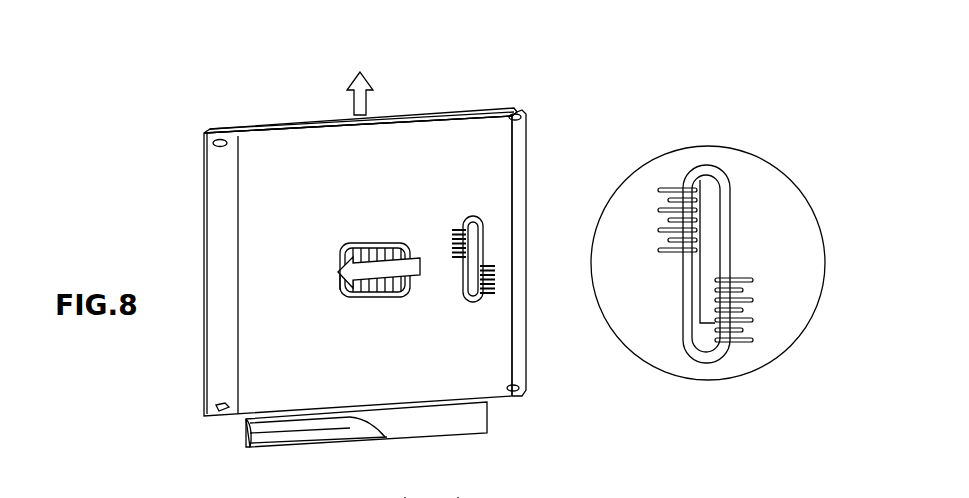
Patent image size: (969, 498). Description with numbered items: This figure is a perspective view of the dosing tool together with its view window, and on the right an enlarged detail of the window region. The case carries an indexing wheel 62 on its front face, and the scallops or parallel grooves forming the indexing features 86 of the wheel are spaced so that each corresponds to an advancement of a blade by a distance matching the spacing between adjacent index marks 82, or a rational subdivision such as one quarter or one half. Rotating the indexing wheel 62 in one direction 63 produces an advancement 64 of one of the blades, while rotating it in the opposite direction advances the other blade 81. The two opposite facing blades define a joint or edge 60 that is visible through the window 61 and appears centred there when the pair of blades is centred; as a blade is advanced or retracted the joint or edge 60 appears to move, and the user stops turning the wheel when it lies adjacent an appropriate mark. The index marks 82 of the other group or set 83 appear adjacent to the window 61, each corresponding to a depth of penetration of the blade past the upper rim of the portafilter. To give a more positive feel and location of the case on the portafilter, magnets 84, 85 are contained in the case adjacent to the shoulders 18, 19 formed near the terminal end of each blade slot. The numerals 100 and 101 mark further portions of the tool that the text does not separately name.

The shoulder 18 is at (203, 137).
The magnet 84 is at (224, 139).
The indexing features 86 is at (375, 242).
The top edge 100 is at (465, 113).
The magnet 85 is at (517, 113).
The shoulder 19 is at (528, 140).
The window 61 is at (479, 238).
The joint or edge 60 is at (703, 318).
The group or set of index marks 83 is at (778, 298).
The index marks 82 is at (775, 320).
The other blade 81 is at (483, 420).
The indexing wheel 62 is at (345, 298).
The bar end 101 is at (246, 446).
The advancement 64 is at (405, 497).
The direction 63 is at (458, 497).